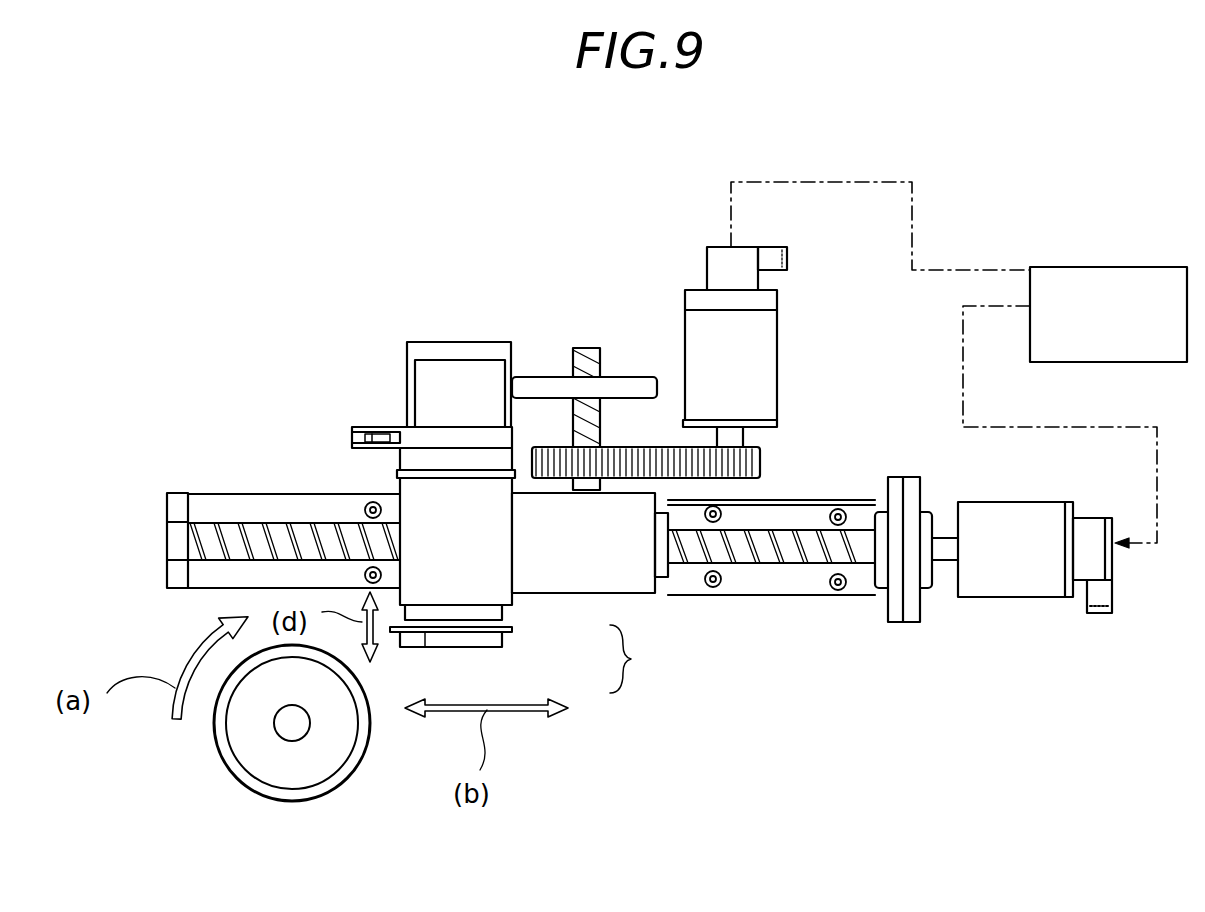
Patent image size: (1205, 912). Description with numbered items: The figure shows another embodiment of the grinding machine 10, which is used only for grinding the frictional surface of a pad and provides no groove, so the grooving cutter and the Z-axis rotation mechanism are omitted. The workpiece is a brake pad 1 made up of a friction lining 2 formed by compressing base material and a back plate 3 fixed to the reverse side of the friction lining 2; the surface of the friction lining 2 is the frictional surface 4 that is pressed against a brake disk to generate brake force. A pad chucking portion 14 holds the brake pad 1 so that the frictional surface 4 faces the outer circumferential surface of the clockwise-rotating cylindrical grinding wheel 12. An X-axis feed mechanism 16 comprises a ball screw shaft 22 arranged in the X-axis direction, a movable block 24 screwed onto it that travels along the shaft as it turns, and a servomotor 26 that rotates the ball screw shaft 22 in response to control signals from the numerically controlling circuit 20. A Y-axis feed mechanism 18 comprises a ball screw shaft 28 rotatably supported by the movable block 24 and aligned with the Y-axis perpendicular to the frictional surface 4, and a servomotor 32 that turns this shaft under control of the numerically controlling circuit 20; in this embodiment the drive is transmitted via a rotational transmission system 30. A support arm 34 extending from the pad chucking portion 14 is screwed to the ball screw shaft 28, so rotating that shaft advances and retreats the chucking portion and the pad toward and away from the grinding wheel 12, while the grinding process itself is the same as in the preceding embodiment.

The brake pad 1 is at (633, 659).
The friction lining 2 is at (505, 640).
The back plate 3 is at (513, 630).
The frictional surface 4 is at (425, 642).
The grinding machine 10 is at (285, 489).
The cylindrical grinding wheel 12 is at (245, 785).
The pad chucking portion 14 is at (383, 462).
The X-axis feed mechanism 16 is at (779, 574).
The Y-axis feed mechanism 18 is at (572, 352).
The numerically controlling circuit 20 is at (1058, 267).
The ball screw shaft 22 is at (785, 543).
The movable block 24 is at (600, 595).
The servomotor 26 is at (1010, 597).
The ball screw shaft 28 is at (603, 357).
The rotational transmission system 30 is at (637, 447).
The servomotor 32 is at (777, 340).
The support arm 34 is at (537, 376).